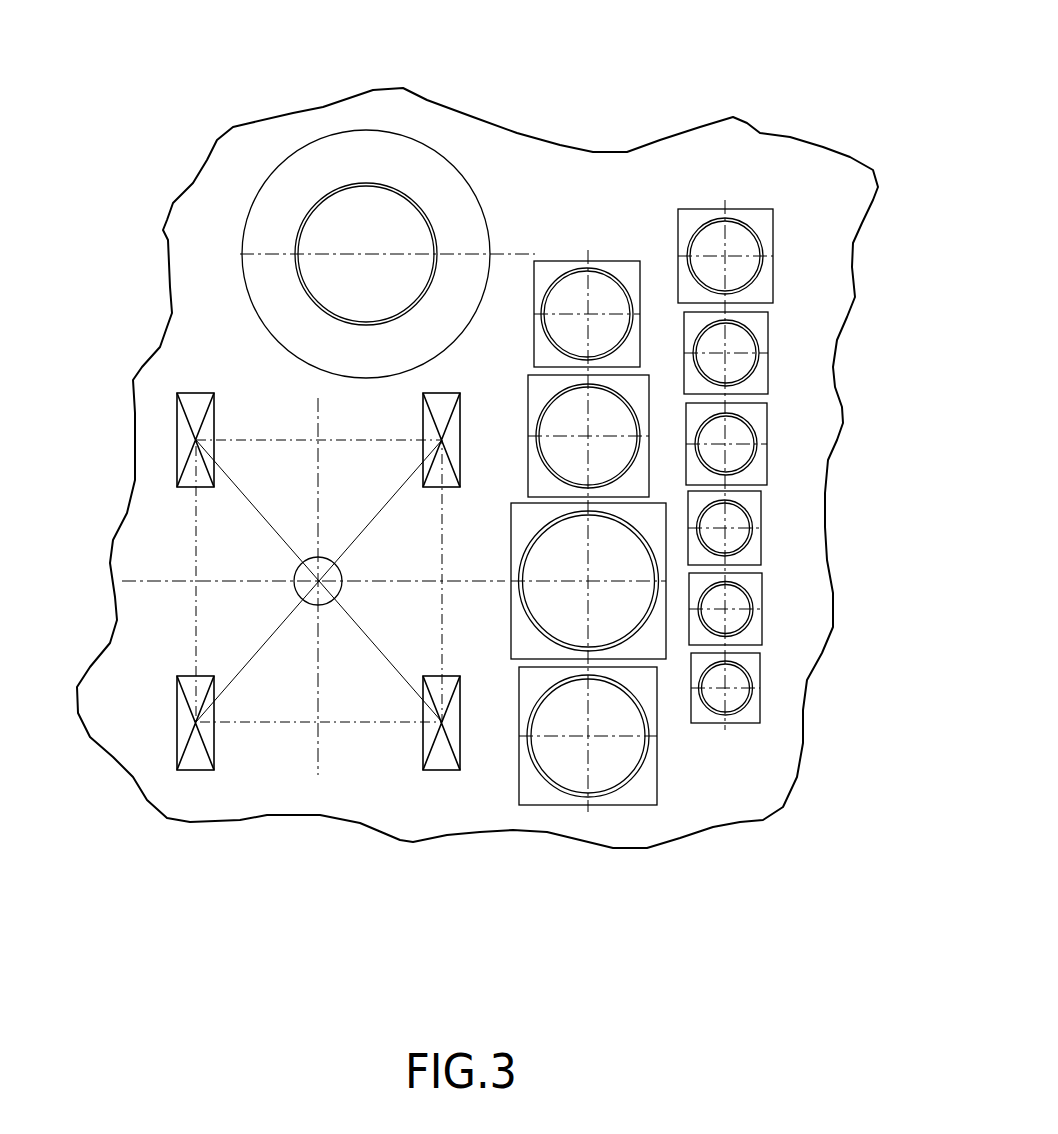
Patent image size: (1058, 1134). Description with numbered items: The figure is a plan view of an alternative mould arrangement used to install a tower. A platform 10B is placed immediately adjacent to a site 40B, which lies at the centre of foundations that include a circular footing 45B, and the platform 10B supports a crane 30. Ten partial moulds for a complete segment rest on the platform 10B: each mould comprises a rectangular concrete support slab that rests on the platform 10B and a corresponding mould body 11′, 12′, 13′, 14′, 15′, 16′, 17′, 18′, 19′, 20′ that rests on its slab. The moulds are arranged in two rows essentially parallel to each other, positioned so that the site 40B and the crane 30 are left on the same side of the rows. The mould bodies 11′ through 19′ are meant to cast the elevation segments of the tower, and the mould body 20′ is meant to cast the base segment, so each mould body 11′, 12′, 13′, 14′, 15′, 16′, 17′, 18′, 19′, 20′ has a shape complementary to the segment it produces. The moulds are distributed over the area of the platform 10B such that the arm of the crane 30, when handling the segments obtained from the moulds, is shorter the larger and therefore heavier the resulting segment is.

The platform 10B is at (200, 332).
The footing 45B is at (330, 158).
The site 40B is at (387, 185).
The crane 30 is at (183, 617).
The mould body 11′ is at (753, 702).
The mould body 12′ is at (753, 623).
The mould body 13′ is at (753, 548).
The mould body 14′ is at (757, 462).
The mould body 15′ is at (758, 367).
The mould body 16′ is at (708, 225).
The mould body 17′ is at (617, 268).
The mould body 18′ is at (545, 407).
The mould body 19′ is at (627, 785).
The mould body 20′ is at (540, 635).